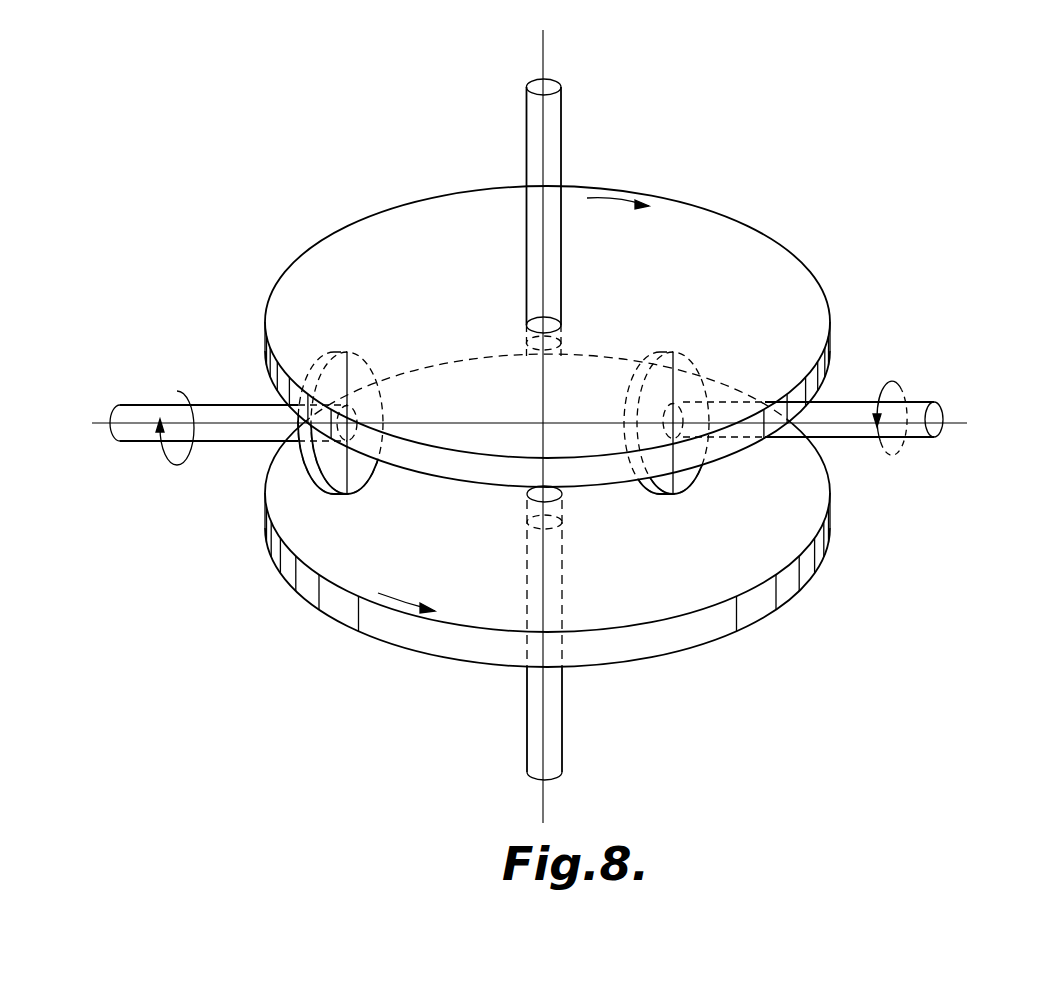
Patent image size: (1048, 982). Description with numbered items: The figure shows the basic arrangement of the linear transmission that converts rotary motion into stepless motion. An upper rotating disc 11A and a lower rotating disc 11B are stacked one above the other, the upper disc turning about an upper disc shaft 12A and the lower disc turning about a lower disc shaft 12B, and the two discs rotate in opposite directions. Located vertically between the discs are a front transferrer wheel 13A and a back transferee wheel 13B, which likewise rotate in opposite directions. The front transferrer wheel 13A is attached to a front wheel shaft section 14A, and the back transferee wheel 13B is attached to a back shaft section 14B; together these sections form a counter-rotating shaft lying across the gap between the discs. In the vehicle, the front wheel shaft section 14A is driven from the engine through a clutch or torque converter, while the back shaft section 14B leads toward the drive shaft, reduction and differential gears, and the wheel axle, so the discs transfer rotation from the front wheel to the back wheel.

The upper rotating disc 11A is at (788, 253).
The lower rotating disc 11B is at (747, 622).
The upper disc shaft 12A is at (552, 173).
The lower disc shaft 12B is at (555, 745).
The front transferrer wheel 13A is at (315, 475).
The back transferee wheel 13B is at (702, 473).
The front wheel shaft section 14A is at (123, 406).
The back shaft section 14B is at (940, 402).